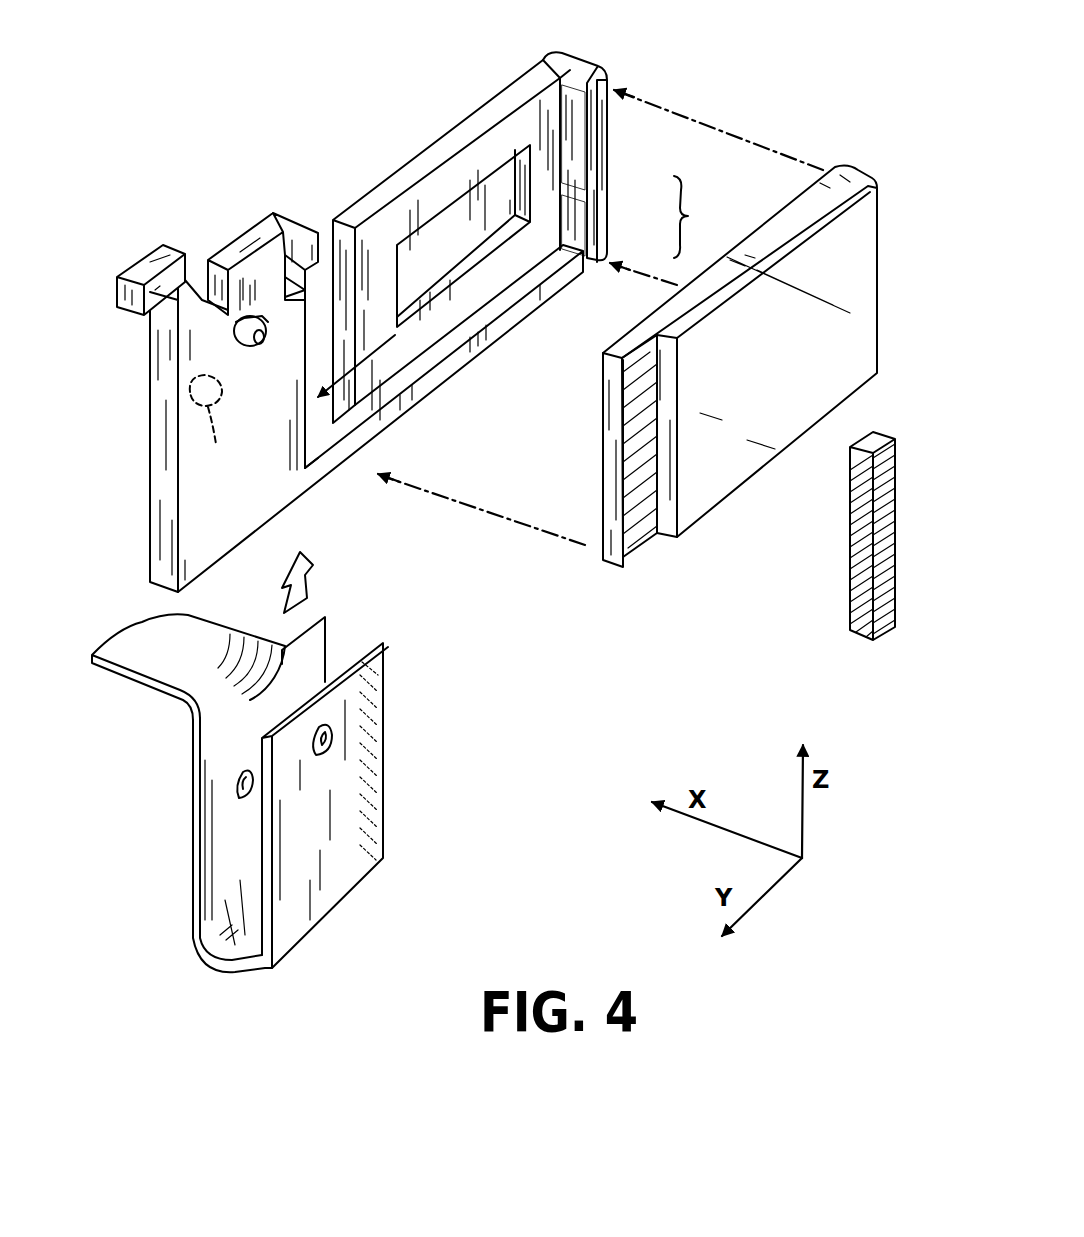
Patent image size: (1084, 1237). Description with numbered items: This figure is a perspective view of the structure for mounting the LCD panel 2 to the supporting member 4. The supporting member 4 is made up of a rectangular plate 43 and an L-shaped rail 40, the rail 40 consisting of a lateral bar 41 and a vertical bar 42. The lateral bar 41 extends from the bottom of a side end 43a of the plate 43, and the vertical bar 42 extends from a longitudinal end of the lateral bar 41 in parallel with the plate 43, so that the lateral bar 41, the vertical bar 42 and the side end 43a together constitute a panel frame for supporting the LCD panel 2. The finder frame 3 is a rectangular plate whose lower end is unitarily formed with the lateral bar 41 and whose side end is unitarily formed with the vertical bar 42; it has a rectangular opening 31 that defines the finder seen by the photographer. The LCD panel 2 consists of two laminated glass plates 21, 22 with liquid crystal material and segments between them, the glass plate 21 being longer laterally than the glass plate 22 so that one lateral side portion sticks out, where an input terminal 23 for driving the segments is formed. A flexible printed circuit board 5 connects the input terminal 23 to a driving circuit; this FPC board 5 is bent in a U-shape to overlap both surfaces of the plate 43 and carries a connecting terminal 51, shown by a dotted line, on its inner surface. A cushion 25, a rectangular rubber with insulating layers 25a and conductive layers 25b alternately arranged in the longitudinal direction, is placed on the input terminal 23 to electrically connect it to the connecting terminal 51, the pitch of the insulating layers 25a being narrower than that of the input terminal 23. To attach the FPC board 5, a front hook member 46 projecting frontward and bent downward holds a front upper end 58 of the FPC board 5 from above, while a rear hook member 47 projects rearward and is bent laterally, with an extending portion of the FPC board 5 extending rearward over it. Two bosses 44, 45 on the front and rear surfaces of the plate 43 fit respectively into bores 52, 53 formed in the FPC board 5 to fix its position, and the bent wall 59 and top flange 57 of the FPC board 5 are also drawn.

The LCD panel 2 is at (718, 357).
The finder frame 3 is at (450, 296).
The supporting member 4 is at (607, 131).
The flexible printed circuit board 5 is at (279, 793).
The glass plate 21 is at (605, 562).
The glass plate 22 is at (693, 488).
The input terminal 23 is at (633, 540).
The cushion 25 is at (836, 536).
The insulating layers 25a is at (858, 493).
The conductive layers 25b is at (858, 535).
The rectangular opening 31 is at (400, 278).
The L-shaped rail 40 is at (450, 384).
The lateral bar 41 is at (610, 253).
The vertical bar 42 is at (580, 187).
The rectangular plate 43 is at (290, 373).
The side end 43a is at (372, 440).
The boss 44 is at (243, 355).
The boss 45 is at (212, 421).
The front hook member 46 is at (300, 227).
The rear hook member 47 is at (155, 257).
The connecting terminal 51 is at (373, 759).
The bore 52 is at (335, 760).
The bore 53 is at (255, 790).
The top flange of bracket 57 is at (168, 656).
The front upper end 58 is at (375, 642).
The bent wall of bracket 59 is at (195, 697).